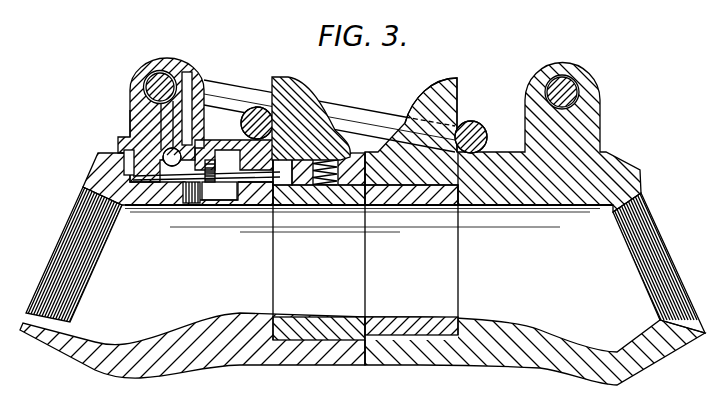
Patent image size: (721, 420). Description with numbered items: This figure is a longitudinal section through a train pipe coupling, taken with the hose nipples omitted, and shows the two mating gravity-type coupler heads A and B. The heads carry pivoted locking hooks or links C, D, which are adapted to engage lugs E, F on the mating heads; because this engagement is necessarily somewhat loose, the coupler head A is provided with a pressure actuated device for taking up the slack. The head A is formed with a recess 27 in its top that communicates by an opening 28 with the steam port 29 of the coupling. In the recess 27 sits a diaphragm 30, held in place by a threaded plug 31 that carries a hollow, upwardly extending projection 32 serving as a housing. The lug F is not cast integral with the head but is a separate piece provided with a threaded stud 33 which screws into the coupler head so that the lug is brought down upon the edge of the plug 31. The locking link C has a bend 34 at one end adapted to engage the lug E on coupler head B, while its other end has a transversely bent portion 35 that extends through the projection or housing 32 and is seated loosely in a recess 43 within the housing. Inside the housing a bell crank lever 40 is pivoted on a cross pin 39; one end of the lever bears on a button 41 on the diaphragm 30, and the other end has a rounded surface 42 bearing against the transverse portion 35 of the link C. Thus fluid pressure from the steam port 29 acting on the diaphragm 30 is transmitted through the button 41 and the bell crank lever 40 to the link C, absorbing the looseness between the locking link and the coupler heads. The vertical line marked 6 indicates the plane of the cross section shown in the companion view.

The section line 6— 6 is at (175, 390).
The recess 27 is at (244, 203).
The opening 28 is at (220, 200).
The steam port 29 is at (112, 265).
The diaphragm 30 is at (223, 148).
The threaded plug 31 is at (130, 165).
The hollow upwardly extending projection 32 is at (136, 96).
The threaded stud 33 is at (329, 165).
The bend 34 is at (482, 123).
The transversely bent portion 35 is at (160, 75).
The cross pin 39 is at (163, 182).
The bell crank lever 40 is at (153, 108).
The button 41 is at (206, 200).
The rounded surface 42 is at (194, 80).
The recess 43 is at (138, 105).
The coupler head A is at (97, 178).
The coupler head B is at (563, 182).
The locking link C is at (357, 110).
The locking link D is at (258, 106).
The lug E is at (443, 96).
The lug F is at (297, 107).